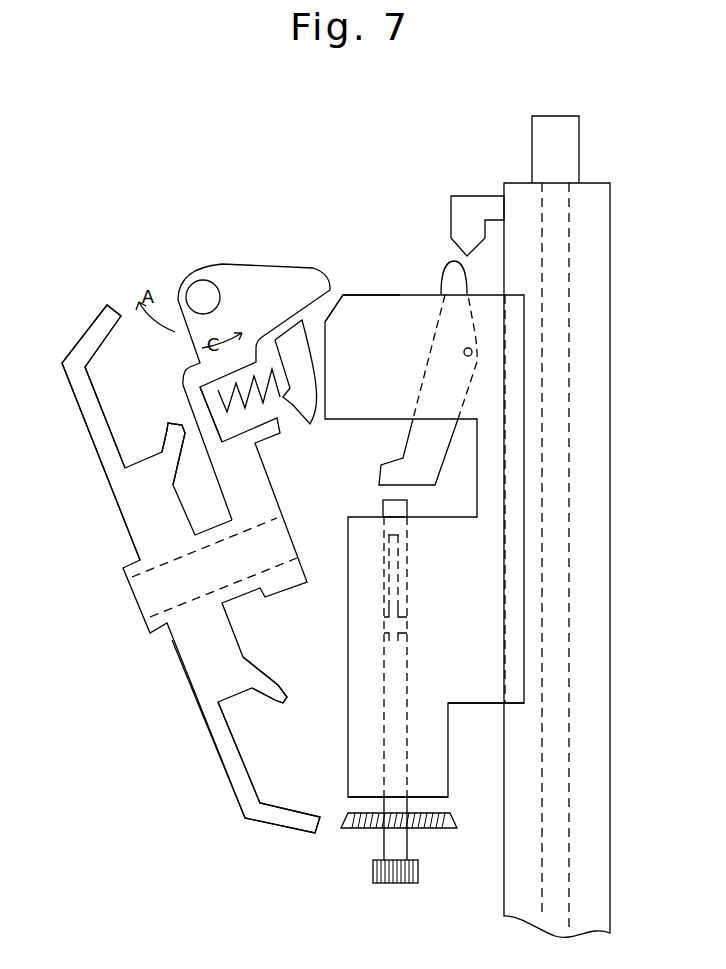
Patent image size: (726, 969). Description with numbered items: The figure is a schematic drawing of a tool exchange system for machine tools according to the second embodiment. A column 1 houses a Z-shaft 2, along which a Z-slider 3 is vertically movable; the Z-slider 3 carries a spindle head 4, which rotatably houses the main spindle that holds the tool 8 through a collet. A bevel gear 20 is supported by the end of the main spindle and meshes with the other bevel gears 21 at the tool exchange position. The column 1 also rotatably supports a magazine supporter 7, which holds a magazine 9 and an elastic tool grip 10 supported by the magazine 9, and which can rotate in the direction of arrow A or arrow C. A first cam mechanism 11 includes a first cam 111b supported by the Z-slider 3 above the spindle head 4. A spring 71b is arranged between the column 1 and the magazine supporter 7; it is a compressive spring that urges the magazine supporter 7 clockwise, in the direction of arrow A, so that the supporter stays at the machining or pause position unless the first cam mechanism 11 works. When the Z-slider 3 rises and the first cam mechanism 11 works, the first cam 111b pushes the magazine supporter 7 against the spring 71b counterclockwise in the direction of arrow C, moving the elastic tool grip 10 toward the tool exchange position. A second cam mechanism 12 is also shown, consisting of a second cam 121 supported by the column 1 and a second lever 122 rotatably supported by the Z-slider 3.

The column 1 is at (563, 228).
The Z-shaft 2 is at (555, 149).
The Z-slider 3 is at (483, 704).
The spindle head 4 is at (440, 786).
The magazine supporter 7 is at (228, 270).
The tool 8 is at (398, 885).
The magazine 9 is at (128, 537).
The elastic tool grip 10 is at (100, 318).
The first cam mechanism 11 is at (304, 250).
The second cam mechanism 12 is at (447, 250).
The bevel gear 20 is at (447, 829).
The bevel gear 21 is at (177, 421).
The spring 71b is at (281, 399).
The first cam 111b is at (334, 313).
The second cam 121 is at (473, 205).
The second lever 122 is at (450, 282).